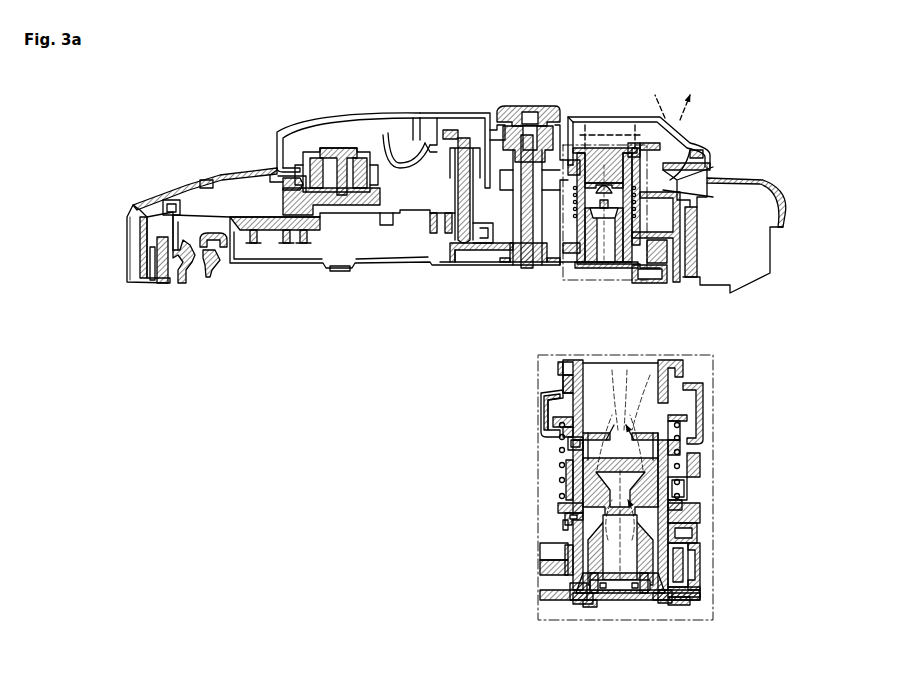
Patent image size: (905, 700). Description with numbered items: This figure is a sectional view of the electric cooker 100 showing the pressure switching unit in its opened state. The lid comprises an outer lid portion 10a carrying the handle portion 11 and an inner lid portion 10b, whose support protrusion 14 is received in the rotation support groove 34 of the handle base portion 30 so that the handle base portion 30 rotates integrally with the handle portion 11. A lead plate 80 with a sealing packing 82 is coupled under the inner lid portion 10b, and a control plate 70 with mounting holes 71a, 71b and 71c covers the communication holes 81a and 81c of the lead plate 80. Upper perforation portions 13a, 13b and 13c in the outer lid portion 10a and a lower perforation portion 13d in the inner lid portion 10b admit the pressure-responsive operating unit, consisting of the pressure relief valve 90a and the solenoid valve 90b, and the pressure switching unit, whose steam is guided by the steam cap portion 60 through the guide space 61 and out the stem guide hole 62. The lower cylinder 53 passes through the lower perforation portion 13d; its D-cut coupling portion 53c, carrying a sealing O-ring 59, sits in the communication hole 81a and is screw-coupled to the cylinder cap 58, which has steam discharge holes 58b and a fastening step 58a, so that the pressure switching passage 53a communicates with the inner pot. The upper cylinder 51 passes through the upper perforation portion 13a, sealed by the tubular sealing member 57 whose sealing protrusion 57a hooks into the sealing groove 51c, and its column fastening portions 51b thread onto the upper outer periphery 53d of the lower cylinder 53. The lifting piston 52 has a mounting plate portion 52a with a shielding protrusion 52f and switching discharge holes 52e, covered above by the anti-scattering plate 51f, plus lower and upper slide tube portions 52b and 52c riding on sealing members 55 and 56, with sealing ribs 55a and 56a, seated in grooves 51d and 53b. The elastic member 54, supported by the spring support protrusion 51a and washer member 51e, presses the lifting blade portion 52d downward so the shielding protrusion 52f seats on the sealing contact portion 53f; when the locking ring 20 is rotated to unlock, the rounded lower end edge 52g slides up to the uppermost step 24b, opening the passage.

The electric cooker 100 is at (186, 80).
The outer lid portion 10a is at (220, 167).
The inner lid portion 10b is at (168, 228).
The handle portion 11 is at (313, 120).
The upper perforation portion 13a is at (675, 150).
The upper perforation portion 13b is at (380, 138).
The upper perforation portion 13c is at (487, 116).
The lower perforation portion 13d is at (413, 250).
The support protrusion 14 is at (288, 182).
The locking ring 20 is at (190, 272).
The uppermost step 24b is at (700, 561).
The handle base portion 30 is at (292, 190).
The rotation support groove 34 is at (318, 250).
The upper cylinder 51 is at (610, 145).
The spring support protrusion 51a is at (565, 416).
The column fastening portion 51b is at (575, 483).
The ring-shaped sealing groove 51c is at (562, 372).
The ring-shaped sealing groove 51d is at (565, 433).
The washer member 51e is at (684, 419).
The anti-scattering plate 51f is at (612, 400).
The lifting piston 52 is at (670, 197).
The mounting plate portion 52a is at (682, 431).
The lower slide tube portion 52b is at (700, 488).
The upper slide tube portion 52c is at (685, 448).
The lifting blade portion 52d is at (690, 515).
The switching discharge hole 52e is at (545, 393).
The shielding protrusion 52f is at (640, 596).
The lower end edge 52g is at (693, 532).
The lower cylinder 53 is at (688, 233).
The pressure switching passage 53a is at (692, 591).
The ring-shaped sealing groove 53b is at (568, 513).
The D-cut coupling portion 53c is at (585, 605).
The upper outer periphery 53d is at (560, 499).
The sealing contact portion 53f is at (655, 380).
The elastic member 54 is at (700, 193).
The sealing member 55 is at (565, 447).
The sealing rib 55a is at (560, 463).
The sealing member 56 is at (565, 521).
The sealing rib 56a is at (553, 553).
The tubular sealing member 57 is at (635, 145).
The sealing protrusion 57a is at (578, 368).
The cylinder cap 58 is at (598, 606).
The fastening step 58a is at (668, 597).
The steam discharge hole 58b is at (575, 590).
The sealing O-ring 59 is at (582, 600).
The steam cap portion 60 is at (570, 112).
The guide space 61 is at (605, 145).
The stem guide hole 62 is at (680, 118).
The control plate 70 is at (460, 250).
The mounting hole 71a is at (568, 563).
The mounting hole 71b is at (440, 227).
The mounting hole 71c is at (480, 270).
The lead plate 80 is at (242, 268).
The communication hole 81a is at (680, 600).
The communication hole 81c is at (518, 255).
The sealing packing 82 is at (208, 272).
The pressure relief valve 90a is at (515, 105).
The solenoid valve 90b is at (448, 133).